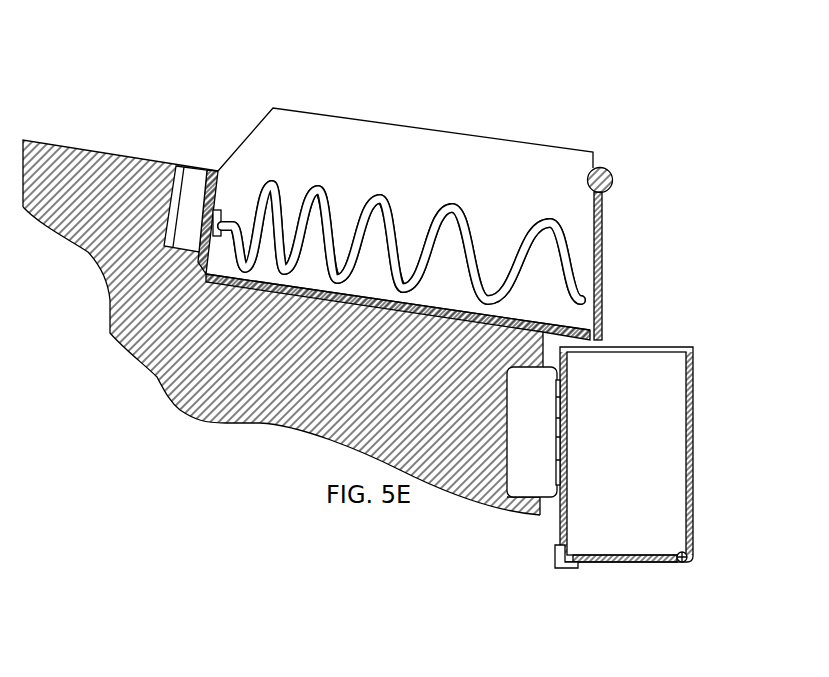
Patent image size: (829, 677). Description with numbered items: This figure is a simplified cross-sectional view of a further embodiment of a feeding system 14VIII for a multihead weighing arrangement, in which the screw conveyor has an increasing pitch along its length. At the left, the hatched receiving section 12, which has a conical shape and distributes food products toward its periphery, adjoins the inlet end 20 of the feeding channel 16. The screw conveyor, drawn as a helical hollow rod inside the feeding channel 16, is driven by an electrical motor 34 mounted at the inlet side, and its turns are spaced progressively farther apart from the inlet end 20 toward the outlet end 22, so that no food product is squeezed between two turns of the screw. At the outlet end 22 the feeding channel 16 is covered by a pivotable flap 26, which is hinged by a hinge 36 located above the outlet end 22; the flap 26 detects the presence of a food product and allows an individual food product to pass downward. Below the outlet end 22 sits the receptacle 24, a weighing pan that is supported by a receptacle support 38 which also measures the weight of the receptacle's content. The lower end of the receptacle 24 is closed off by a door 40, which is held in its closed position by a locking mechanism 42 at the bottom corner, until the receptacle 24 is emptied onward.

The receiving section 12 is at (35, 134).
The feeding system 14VIII is at (456, 106).
The feeding channel 16 is at (345, 218).
The inlet end 20 is at (220, 171).
The outlet end 22 is at (582, 322).
The receptacle 24 is at (696, 407).
The flap 26 is at (603, 255).
The electrical motor 34 is at (185, 210).
The hinge 36 is at (612, 180).
The receptacle support 38 is at (538, 420).
The door 40 is at (630, 562).
The locking mechanism 42 is at (577, 572).